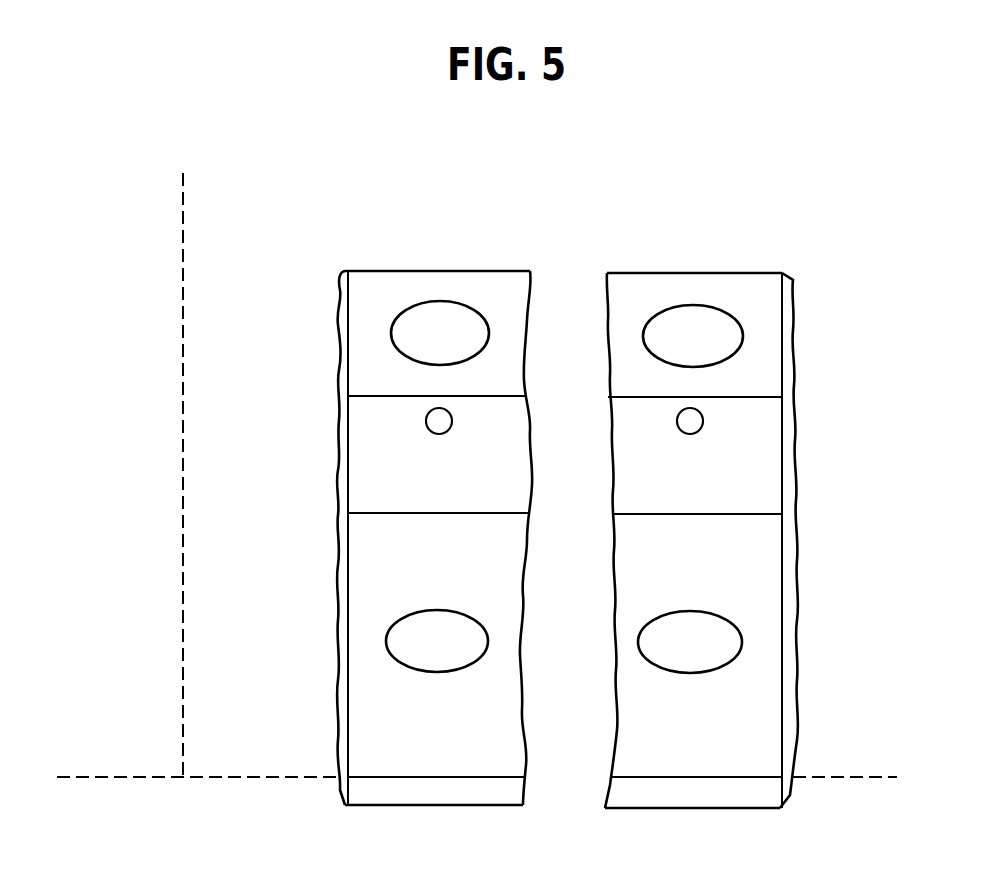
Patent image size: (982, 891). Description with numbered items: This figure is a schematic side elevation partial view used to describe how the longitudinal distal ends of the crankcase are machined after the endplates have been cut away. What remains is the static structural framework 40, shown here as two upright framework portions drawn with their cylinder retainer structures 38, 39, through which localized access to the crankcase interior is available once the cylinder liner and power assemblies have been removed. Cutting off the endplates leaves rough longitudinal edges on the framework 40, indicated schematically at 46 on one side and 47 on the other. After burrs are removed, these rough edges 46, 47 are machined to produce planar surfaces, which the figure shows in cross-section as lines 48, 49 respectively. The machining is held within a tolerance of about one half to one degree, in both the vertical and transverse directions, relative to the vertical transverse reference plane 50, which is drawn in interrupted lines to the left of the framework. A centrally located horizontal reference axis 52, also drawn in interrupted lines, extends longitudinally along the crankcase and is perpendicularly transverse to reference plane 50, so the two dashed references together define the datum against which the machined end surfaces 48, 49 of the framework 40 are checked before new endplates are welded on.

The cylinder retainer structure 38 is at (469, 323).
The cylinder retainer structure 39 is at (674, 318).
The remaining framework structure 40 is at (683, 240).
The rough longitudinal edge 46 is at (338, 352).
The rough longitudinal edge 47 is at (793, 345).
The planar surface line 48 is at (348, 458).
The planar surface line 49 is at (782, 465).
The vertical transverse reference plane 50 is at (186, 563).
The horizontal reference axis 52 is at (236, 775).